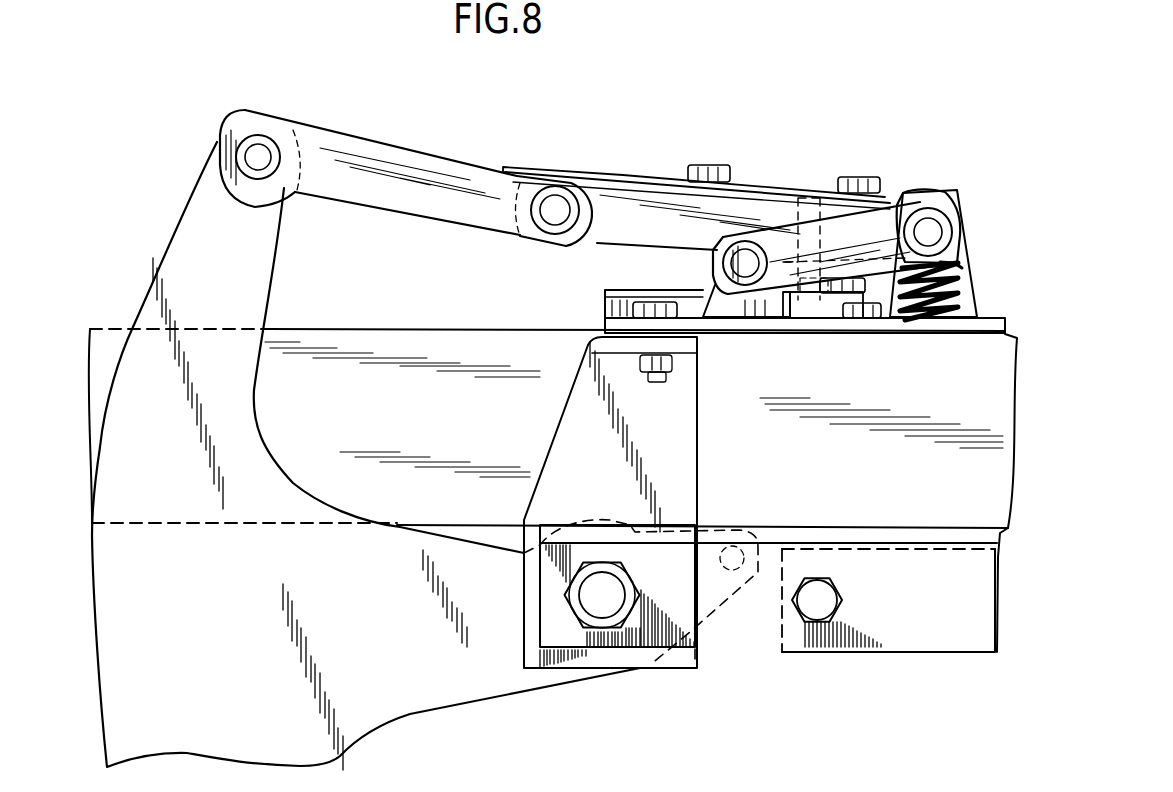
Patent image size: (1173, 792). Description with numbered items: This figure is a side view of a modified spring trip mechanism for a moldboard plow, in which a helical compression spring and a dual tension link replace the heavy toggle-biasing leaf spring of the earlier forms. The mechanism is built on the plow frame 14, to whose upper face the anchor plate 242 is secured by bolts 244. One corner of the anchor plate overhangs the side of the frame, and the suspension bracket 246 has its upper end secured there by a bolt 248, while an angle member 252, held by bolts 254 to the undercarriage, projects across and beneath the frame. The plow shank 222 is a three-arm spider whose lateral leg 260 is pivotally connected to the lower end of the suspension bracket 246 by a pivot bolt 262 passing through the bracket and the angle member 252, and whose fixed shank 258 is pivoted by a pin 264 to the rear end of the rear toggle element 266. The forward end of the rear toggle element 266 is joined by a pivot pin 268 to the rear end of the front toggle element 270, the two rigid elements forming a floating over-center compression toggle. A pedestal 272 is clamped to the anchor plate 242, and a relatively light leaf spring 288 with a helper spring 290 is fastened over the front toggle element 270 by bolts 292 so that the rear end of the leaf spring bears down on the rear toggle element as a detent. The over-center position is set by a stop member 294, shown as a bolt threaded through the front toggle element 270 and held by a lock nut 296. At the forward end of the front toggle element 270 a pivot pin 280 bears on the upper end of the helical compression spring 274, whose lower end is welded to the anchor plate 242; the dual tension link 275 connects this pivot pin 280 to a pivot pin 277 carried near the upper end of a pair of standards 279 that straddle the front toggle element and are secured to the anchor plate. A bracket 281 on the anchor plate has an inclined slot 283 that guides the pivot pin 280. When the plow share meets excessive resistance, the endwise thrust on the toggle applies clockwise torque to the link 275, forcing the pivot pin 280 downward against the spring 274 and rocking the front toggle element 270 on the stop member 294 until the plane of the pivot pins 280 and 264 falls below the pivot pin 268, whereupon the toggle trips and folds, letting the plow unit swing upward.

The plow frame 14 is at (455, 347).
The plow shank 222 is at (258, 430).
The anchor plate 242 is at (923, 325).
The bolts 244 is at (725, 303).
The suspension bracket 246 is at (687, 488).
The bolt 248 is at (655, 382).
The angle member 252 is at (750, 625).
The bolts 254 is at (817, 612).
The fixed shank 258 is at (267, 257).
The lateral leg 260 is at (440, 553).
The pivot bolt 262 is at (612, 605).
The pivot pin 264 is at (258, 152).
The rear toggle element 266 is at (417, 156).
The pivot pin 268 is at (549, 200).
The front toggle element 270 is at (766, 212).
The pedestal 272 is at (610, 307).
The helical compression spring 274 is at (962, 300).
The dual tension link 275 is at (877, 232).
The pivot pin 277 is at (790, 318).
The standards 279 is at (770, 308).
The pivot pin 280 is at (933, 225).
The bracket 281 is at (960, 303).
The inclined slot 283 is at (967, 263).
The leaf spring 288 is at (590, 177).
The helper spring 290 is at (657, 177).
The bolts 292 is at (712, 165).
The stop member 294 is at (800, 310).
The lock nut 296 is at (817, 287).